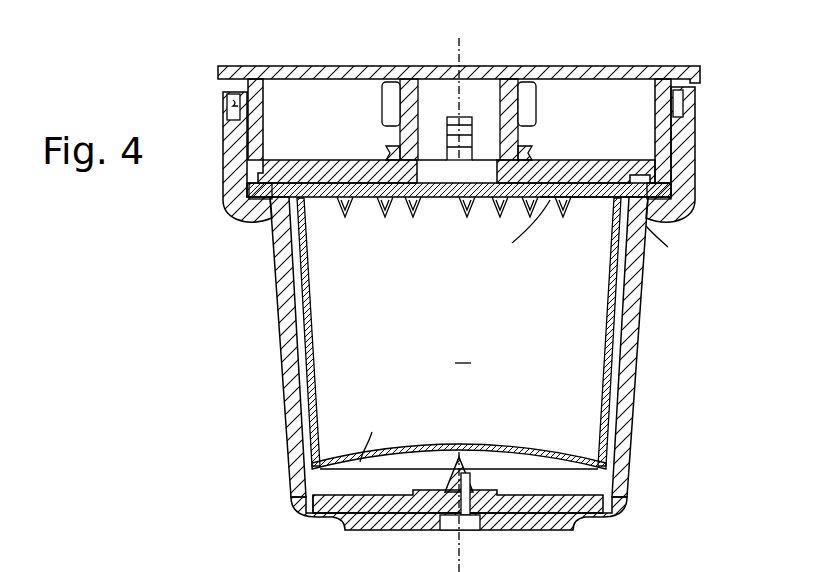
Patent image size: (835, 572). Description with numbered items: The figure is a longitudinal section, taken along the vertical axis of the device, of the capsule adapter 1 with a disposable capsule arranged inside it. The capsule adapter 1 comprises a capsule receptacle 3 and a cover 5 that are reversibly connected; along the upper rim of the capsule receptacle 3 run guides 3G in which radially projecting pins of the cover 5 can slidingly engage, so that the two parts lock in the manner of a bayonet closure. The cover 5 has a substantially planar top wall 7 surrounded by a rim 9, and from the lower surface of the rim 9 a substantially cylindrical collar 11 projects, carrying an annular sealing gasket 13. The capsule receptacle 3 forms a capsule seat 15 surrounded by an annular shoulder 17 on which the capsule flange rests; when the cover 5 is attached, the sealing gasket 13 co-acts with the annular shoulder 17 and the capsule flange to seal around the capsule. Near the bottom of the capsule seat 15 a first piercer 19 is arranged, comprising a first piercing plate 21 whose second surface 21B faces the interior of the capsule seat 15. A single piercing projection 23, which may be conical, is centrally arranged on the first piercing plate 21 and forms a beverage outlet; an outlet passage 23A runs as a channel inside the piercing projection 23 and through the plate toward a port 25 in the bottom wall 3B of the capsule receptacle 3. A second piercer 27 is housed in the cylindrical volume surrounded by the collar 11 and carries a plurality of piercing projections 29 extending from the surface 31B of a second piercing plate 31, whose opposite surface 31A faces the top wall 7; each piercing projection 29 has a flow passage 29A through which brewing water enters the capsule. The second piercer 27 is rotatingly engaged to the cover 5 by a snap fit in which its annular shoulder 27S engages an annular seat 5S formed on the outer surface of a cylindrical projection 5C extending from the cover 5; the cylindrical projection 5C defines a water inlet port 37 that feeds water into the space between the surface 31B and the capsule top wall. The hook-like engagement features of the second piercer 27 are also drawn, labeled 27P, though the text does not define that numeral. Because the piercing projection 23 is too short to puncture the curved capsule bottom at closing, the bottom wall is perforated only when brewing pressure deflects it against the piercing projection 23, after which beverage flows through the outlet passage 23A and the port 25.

The capsule adapter 1 is at (488, 292).
The capsule receptacle 3 is at (464, 327).
The bottom wall 3B is at (366, 532).
The guide 3G is at (230, 116).
The cover 5 is at (489, 154).
The cylindrical projection 5C is at (408, 124).
The annular seat 5S is at (500, 138).
The top wall 7 is at (598, 68).
The rim 9 is at (695, 84).
The collar 11 is at (504, 217).
The sealing gasket 13 is at (688, 203).
The capsule seat 15 is at (624, 352).
The annular shoulder 17 is at (258, 220).
The first piercer 19 is at (452, 488).
The first piercing plate 21 is at (560, 514).
The second surface 21B is at (330, 490).
The piercing projection 23 is at (481, 460).
The outlet passage 23A is at (470, 486).
The port 25 is at (450, 523).
The second piercer 27 is at (372, 99).
The retaining hook left 27P is at (388, 147).
The annular shoulder 27S is at (528, 134).
The piercing projections 29 is at (405, 218).
The flow passage 29A is at (463, 222).
The second piercing plate 31 is at (456, 146).
The surface 31A is at (336, 152).
The surface 31B is at (597, 195).
The water inlet port 37 is at (436, 93).